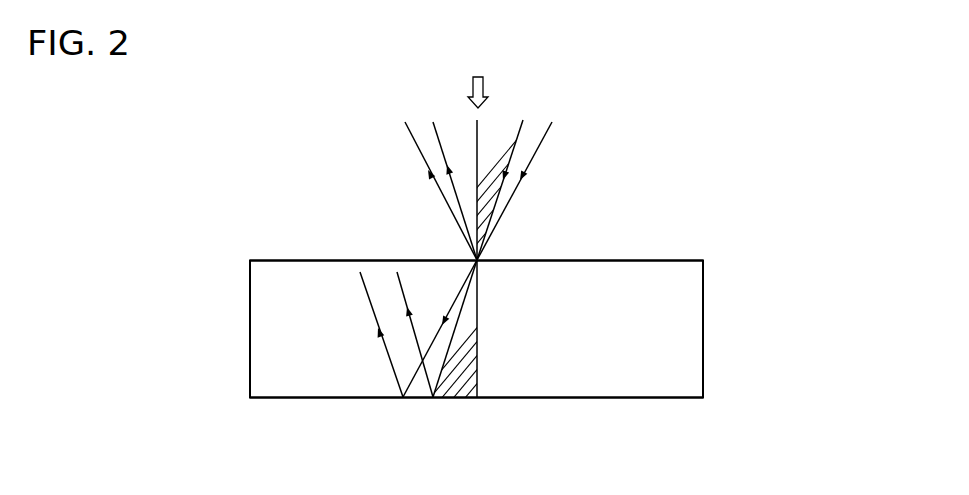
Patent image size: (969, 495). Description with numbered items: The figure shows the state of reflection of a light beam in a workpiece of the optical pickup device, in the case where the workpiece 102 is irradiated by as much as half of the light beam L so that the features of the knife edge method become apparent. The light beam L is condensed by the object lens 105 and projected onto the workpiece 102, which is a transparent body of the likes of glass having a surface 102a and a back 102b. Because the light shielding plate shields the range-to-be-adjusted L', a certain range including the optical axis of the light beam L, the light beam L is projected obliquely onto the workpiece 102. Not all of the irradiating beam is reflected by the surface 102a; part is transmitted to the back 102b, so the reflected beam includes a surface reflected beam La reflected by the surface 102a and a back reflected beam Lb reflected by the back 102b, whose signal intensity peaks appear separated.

The workpiece 102 is at (703, 328).
The surface of the workpiece 102a is at (288, 260).
The back of the workpiece 102b is at (288, 398).
The object lens 105 is at (478, 79).
The light beam L is at (494, 259).
The range-to-be-adjusted L' is at (495, 307).
The surface reflected beam La is at (430, 150).
The back reflected beam Lb is at (402, 355).